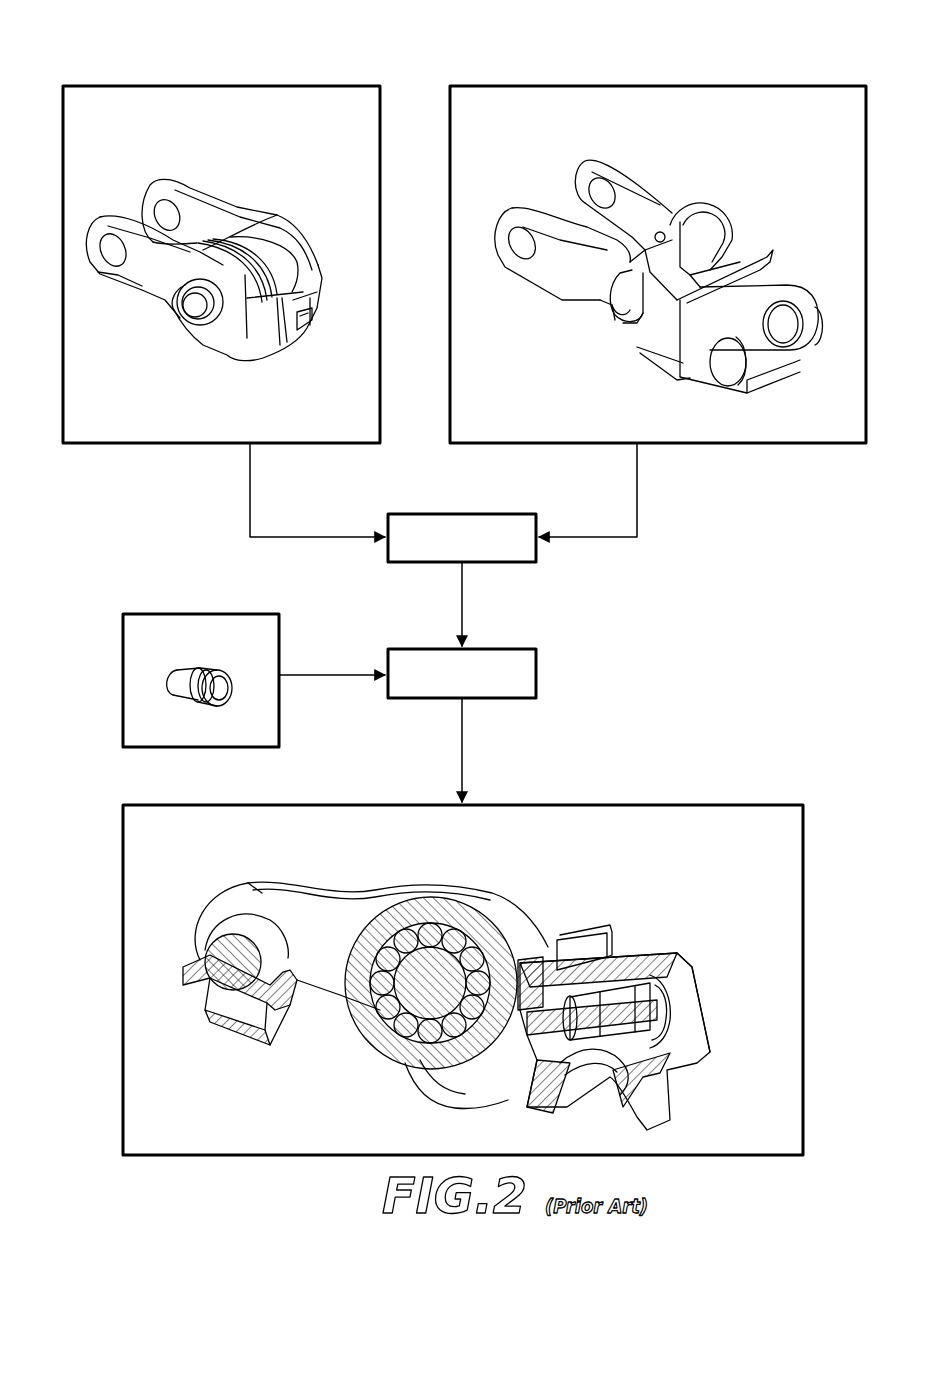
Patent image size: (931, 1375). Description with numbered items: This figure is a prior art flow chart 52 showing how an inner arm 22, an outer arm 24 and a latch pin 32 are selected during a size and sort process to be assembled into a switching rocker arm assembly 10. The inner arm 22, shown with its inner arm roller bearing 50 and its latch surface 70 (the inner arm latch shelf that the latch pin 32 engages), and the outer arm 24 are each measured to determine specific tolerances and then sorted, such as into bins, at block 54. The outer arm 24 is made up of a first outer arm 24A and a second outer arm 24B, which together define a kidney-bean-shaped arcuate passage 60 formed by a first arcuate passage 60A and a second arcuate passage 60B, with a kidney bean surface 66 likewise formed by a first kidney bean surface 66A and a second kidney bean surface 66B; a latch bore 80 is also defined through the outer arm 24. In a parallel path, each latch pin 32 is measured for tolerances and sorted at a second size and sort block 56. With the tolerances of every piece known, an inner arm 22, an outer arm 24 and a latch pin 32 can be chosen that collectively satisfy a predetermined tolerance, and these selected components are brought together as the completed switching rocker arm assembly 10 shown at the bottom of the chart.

The flow chart 52 is at (63, 57).
The block 54 is at (538, 553).
The size and sort step (latch pin) 56 is at (538, 675).
The inner arm 22 is at (200, 198).
The inner arm roller bearing 50 is at (267, 248).
The latch surface 70 is at (300, 293).
The outer arm 24 is at (713, 208).
The first outer arm 24A is at (530, 273).
The second outer arm 24B is at (623, 175).
The arcuate passage 60 is at (703, 263).
The first arcuate passage 60A is at (620, 333).
The second arcuate passage 60B is at (685, 220).
The kidney bean surface 66 is at (697, 250).
The first kidney bean surface 66A is at (618, 330).
The second kidney bean surface 66B is at (743, 252).
The latch bore 80 is at (783, 325).
The latch pin 32 is at (190, 692).
The switching rocker arm assembly 10 is at (699, 893).